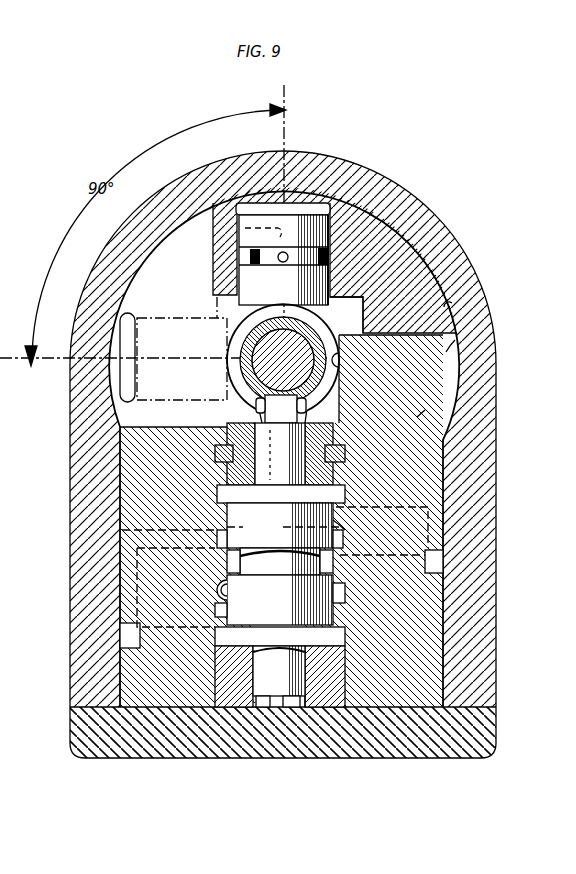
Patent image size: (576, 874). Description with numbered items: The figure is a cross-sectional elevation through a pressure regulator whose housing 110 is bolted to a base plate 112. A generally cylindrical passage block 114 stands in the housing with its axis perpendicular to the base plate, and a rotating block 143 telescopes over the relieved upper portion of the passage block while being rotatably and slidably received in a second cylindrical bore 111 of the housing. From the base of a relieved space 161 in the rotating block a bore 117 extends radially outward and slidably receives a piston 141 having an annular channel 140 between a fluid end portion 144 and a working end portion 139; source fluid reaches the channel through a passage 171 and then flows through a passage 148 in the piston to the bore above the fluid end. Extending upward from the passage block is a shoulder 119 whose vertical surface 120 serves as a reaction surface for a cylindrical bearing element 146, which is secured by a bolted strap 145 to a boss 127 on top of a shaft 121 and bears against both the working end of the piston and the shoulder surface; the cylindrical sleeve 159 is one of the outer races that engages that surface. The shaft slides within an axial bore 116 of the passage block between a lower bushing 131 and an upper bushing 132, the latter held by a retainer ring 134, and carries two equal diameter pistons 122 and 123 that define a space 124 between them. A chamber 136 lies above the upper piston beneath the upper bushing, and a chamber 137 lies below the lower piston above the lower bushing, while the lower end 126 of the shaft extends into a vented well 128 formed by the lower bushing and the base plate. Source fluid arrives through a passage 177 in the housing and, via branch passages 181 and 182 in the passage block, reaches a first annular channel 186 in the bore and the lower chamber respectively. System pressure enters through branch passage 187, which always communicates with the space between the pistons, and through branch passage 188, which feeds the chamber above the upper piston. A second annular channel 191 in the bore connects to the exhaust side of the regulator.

The housing 110 is at (400, 193).
The base plate 112 is at (80, 742).
The rotating block 143 is at (417, 273).
The second cylindrical bore 111 is at (447, 310).
The relieved space 161 is at (455, 340).
The passage block 114 is at (417, 417).
The working end portion 139 is at (318, 305).
The branch passage 181 is at (187, 567).
The cylindrical sleeve 159 is at (374, 521).
The shoulder 119 is at (360, 343).
The vertical surface 120 is at (340, 366).
The fluid end portion 144 is at (314, 213).
The piston 141 is at (318, 236).
The passage 148 is at (236, 232).
The annular channel 140 is at (242, 261).
The passage 171 is at (280, 262).
The bore 117 is at (193, 284).
The cylindrical bearing element 146 is at (218, 370).
The bolted strap 145 is at (247, 382).
The boss 127 is at (265, 405).
The upper bushing 132 is at (340, 440).
The retainer ring 134 is at (217, 457).
The chamber 136 is at (346, 460).
The piston 122 is at (280, 540).
The branch passage 187 is at (335, 520).
The branch passage 188 is at (447, 500).
The first annular channel 186 is at (232, 554).
The piston 123 is at (272, 613).
The space 124 is at (212, 586).
The shaft 121 is at (218, 610).
The second annular channel 191 is at (346, 593).
The chamber 137 is at (330, 640).
The lower bushing 131 is at (330, 683).
The lower end 126 is at (267, 693).
The vented well 128 is at (296, 708).
The bore 116 is at (315, 709).
The passage 177 is at (130, 637).
The branch passage 182 is at (180, 640).